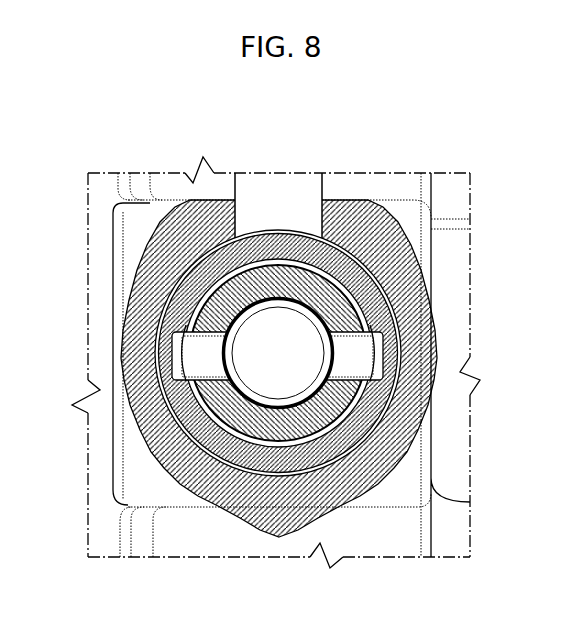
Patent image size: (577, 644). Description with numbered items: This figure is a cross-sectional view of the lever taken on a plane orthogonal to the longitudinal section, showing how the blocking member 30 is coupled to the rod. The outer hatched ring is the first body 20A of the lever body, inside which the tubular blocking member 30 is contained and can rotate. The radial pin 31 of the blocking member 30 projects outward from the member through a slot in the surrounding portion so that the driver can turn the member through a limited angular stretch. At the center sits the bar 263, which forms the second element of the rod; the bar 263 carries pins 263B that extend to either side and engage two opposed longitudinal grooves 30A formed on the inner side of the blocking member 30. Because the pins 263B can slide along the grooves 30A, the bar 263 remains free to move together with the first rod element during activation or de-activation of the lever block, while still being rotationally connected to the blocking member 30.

The first body 20A is at (382, 253).
The blocking member 30 is at (378, 280).
The longitudinal grooves 30A is at (163, 330).
The radial pin 31 is at (295, 190).
The bar 263 is at (257, 381).
The pins 263B is at (212, 358).